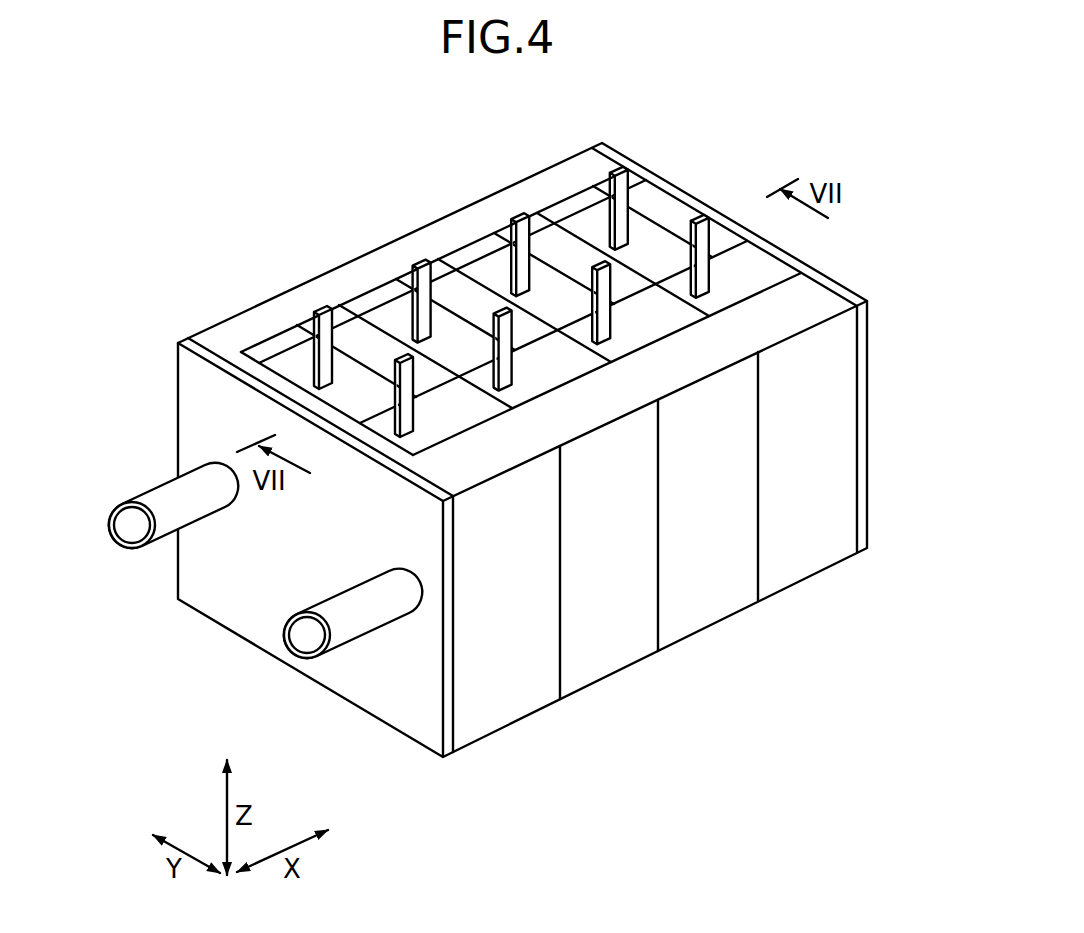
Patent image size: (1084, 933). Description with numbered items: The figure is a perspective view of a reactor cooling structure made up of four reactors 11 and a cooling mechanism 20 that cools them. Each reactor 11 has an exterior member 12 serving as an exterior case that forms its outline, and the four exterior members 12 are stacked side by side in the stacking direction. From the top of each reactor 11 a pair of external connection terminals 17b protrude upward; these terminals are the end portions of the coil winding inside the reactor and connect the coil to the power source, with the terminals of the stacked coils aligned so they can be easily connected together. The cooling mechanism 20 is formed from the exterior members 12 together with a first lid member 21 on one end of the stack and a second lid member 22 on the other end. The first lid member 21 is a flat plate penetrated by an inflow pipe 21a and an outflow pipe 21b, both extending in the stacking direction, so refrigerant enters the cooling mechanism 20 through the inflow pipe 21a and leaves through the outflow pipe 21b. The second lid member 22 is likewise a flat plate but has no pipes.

The reactor 11 is at (222, 318).
The exterior member 12 is at (515, 707).
The external connection terminal 17b is at (404, 355).
The cooling mechanism 20 is at (160, 394).
The first lid member 21 is at (221, 621).
The inflow pipe 21a is at (347, 622).
The outflow pipe 21b is at (157, 499).
The second lid member 22 is at (872, 512).